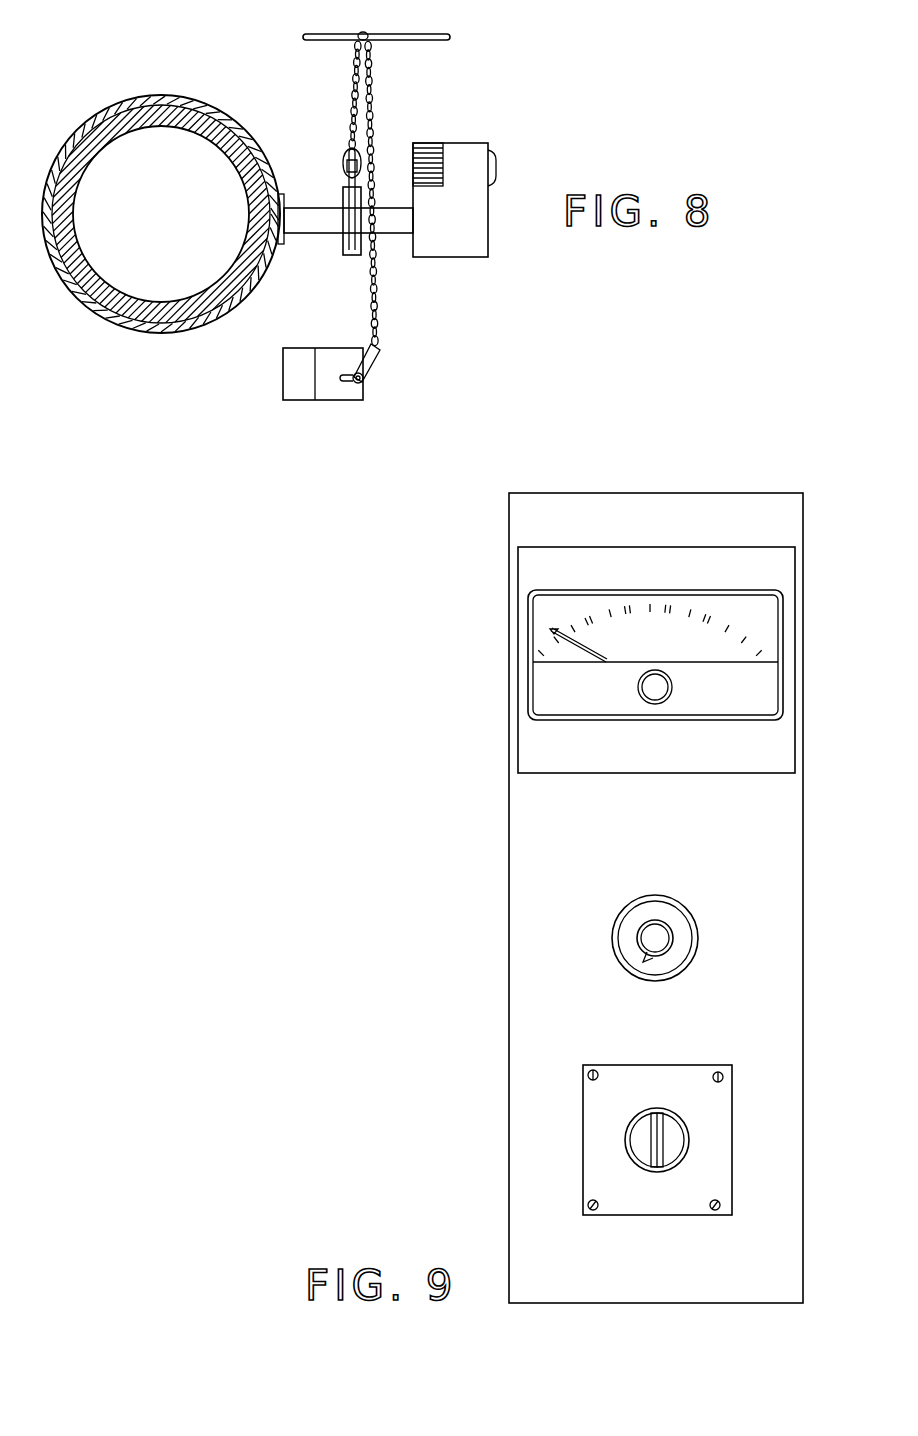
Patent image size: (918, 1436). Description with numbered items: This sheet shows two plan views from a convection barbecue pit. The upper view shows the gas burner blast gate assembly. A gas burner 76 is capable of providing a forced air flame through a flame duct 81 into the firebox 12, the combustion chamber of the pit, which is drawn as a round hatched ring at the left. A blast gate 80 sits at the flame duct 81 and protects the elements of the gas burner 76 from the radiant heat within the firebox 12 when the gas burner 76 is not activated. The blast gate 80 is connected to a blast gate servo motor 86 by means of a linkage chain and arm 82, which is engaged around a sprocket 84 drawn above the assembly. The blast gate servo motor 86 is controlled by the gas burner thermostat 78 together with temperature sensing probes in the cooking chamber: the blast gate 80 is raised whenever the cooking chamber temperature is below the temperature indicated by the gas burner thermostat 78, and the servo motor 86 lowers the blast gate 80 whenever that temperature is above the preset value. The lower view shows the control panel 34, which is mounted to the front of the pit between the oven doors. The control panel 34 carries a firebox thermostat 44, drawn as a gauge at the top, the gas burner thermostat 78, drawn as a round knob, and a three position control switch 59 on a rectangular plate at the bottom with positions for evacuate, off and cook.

In FIG. 8, the firebox 12 is at (160, 232).
In FIG. 8, the gas burner 76 is at (455, 219).
In FIG. 8, the blast gate 80 is at (346, 188).
In FIG. 8, the flame duct 81 is at (390, 235).
In FIG. 8, the linkage chain and arm 82 is at (377, 106).
In FIG. 8, the sprocket 84 is at (378, 37).
In FIG. 8, the blast gate servo motor 86 is at (312, 386).
In FIG. 9, the control panel 34 is at (500, 855).
In FIG. 9, the firebox thermostat 44 is at (803, 660).
In FIG. 9, the gas burner thermostat 78 is at (697, 958).
In FIG. 9, the three position control switch 59 is at (732, 1153).